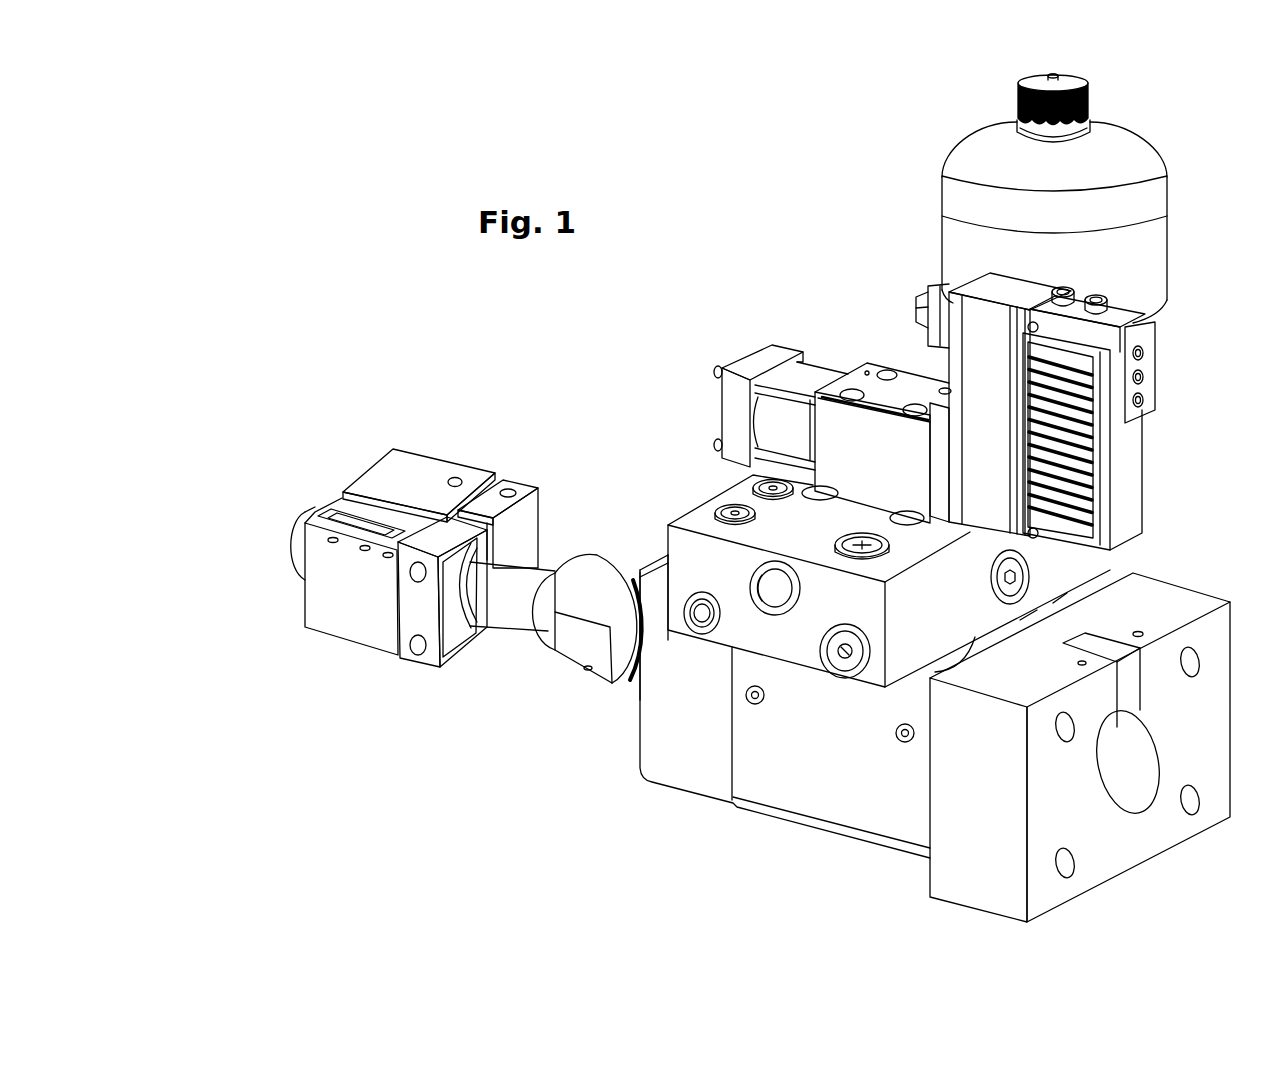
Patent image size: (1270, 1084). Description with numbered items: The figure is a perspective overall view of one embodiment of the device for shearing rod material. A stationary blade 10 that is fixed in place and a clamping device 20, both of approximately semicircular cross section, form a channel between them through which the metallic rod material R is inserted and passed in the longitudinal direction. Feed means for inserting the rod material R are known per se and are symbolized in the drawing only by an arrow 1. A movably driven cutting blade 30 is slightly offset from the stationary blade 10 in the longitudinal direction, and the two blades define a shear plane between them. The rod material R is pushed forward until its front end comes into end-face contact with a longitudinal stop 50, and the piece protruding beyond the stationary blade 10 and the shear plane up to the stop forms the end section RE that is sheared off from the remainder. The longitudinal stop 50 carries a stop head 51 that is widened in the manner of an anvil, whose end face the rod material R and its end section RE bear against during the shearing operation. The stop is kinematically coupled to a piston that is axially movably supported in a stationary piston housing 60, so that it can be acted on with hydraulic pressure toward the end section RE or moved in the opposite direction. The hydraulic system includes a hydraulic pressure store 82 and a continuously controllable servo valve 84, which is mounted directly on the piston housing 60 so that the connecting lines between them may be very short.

The arrow 1 is at (276, 525).
The rod material R is at (288, 552).
The end section RE is at (494, 598).
The stationary blade 10 is at (413, 436).
The clamping device 20 is at (326, 649).
The cutting blade 30 is at (413, 673).
The longitudinal stop 50 is at (587, 621).
The stop head 51 is at (557, 570).
The piston housing 60 is at (771, 836).
The hydraulic pressure store 82 is at (1158, 260).
The servo valve 84 is at (926, 366).